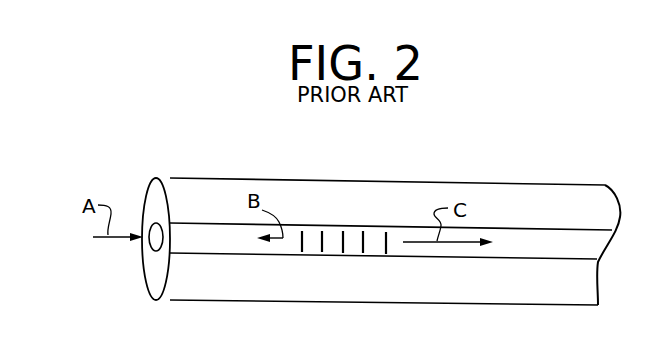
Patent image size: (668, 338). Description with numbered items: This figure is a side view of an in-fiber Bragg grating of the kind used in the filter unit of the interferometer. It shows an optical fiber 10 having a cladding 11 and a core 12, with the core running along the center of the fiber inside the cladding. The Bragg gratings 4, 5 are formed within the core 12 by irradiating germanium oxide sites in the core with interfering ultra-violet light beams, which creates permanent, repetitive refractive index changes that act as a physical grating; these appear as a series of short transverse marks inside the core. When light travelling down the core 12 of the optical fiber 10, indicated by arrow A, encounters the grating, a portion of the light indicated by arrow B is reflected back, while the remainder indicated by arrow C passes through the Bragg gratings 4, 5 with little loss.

The optical fiber 10 is at (230, 154).
The cladding 11 is at (517, 200).
The core 12 is at (560, 240).
The Bragg grating 4 is at (345, 226).
The Bragg grating 5 is at (361, 191).